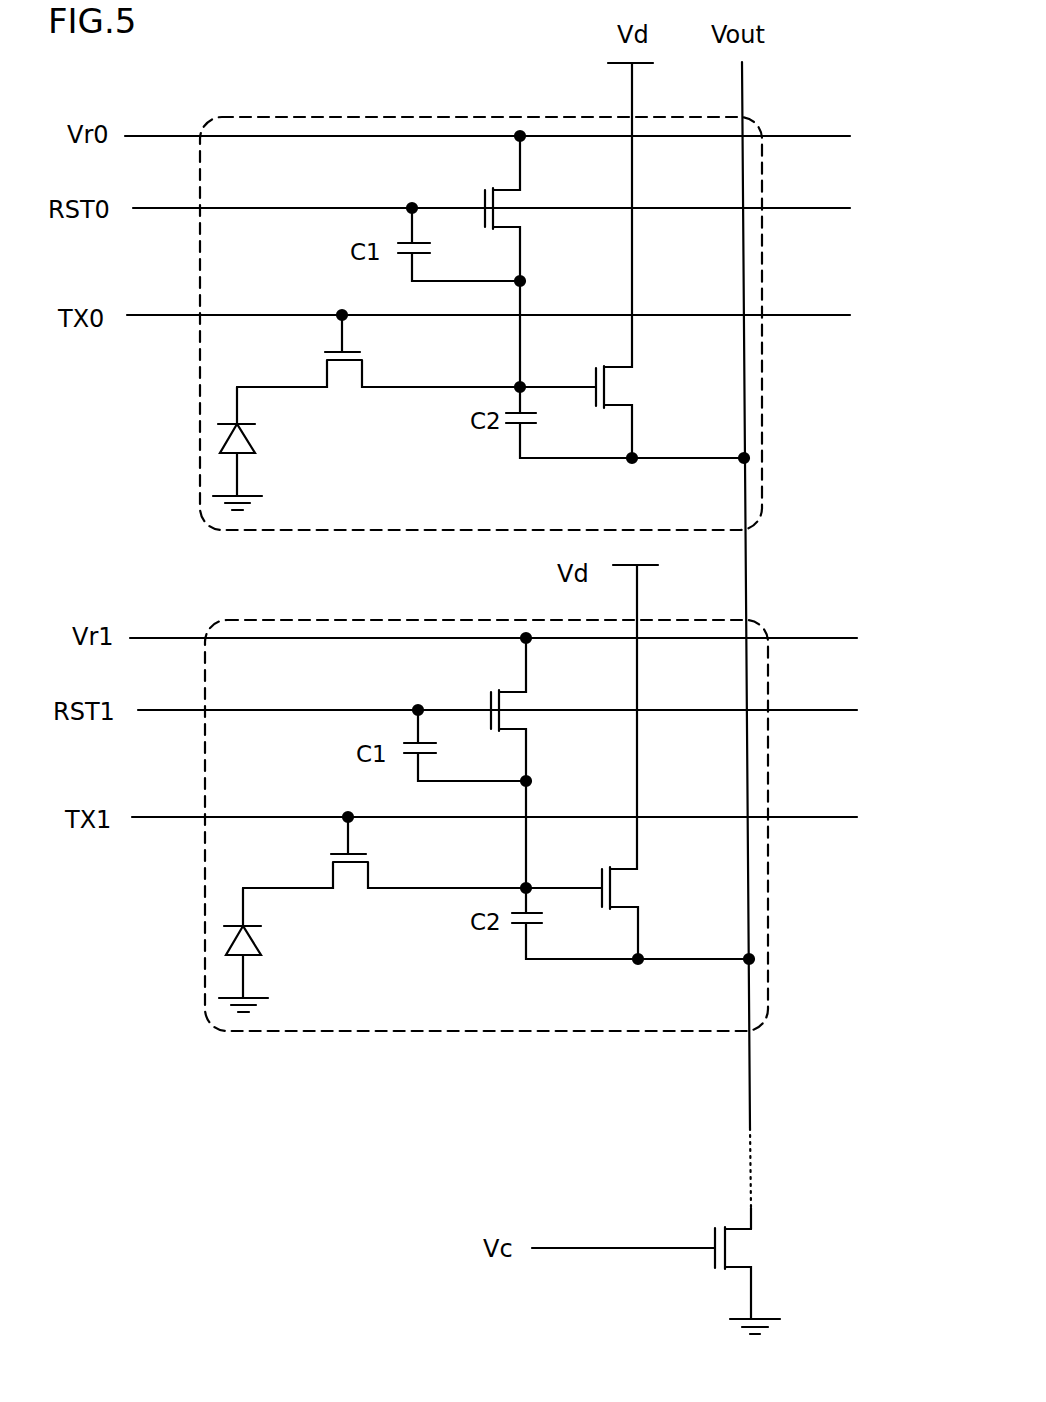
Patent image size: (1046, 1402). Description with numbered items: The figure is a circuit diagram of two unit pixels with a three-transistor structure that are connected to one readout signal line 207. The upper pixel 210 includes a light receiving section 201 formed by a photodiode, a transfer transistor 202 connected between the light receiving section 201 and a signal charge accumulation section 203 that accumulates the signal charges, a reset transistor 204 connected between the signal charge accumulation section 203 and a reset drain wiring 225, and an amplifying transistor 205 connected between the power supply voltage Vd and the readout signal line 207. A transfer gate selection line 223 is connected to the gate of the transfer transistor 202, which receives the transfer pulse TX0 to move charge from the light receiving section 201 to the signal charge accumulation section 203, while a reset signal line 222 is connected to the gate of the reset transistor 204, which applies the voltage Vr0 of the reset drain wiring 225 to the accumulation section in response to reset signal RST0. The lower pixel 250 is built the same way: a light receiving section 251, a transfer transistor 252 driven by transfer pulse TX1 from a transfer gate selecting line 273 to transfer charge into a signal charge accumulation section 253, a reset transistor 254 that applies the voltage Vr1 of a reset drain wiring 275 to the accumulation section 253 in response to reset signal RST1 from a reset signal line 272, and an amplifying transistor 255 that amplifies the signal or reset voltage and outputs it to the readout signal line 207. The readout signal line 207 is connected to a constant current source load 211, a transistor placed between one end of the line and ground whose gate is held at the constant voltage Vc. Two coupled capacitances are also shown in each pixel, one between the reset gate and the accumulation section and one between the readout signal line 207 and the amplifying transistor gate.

The light receiving section 201 is at (248, 435).
The transfer transistor 202 is at (342, 380).
The signal charge accumulation section 203 is at (518, 380).
The reset transistor 204 is at (500, 214).
The amplifying transistor 205 is at (606, 385).
The pixel 210 is at (428, 115).
The reset signal line 222 is at (817, 208).
The transfer gate selection line 223 is at (817, 315).
The reset drain wiring 225 is at (817, 136).
The pixel 250 is at (408, 620).
The light receiving section 251 is at (254, 937).
The transfer transistor 252 is at (348, 882).
The signal charge accumulation section 253 is at (524, 884).
The reset transistor 254 is at (506, 716).
The amplifying transistor 255 is at (612, 887).
The reset signal line 272 is at (823, 710).
The transfer gate selecting line 273 is at (823, 817).
The reset drain wiring 275 is at (823, 638).
The readout signal line 207 is at (751, 1058).
The constant current source load 211 is at (733, 1248).